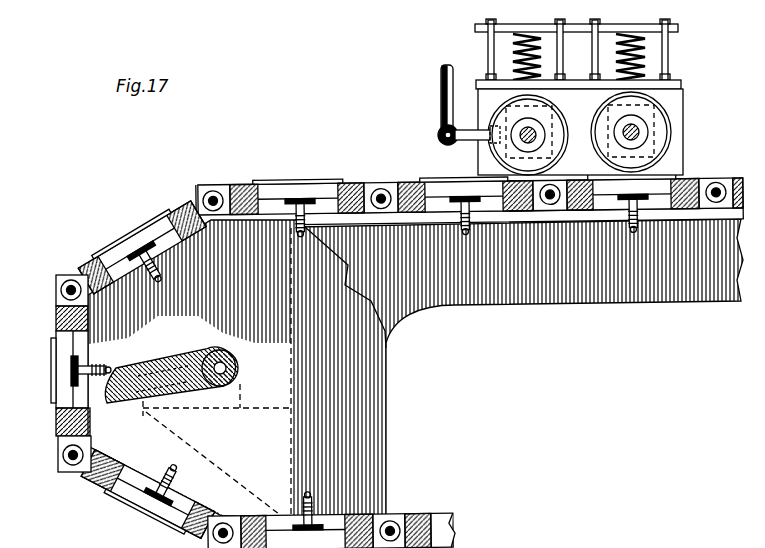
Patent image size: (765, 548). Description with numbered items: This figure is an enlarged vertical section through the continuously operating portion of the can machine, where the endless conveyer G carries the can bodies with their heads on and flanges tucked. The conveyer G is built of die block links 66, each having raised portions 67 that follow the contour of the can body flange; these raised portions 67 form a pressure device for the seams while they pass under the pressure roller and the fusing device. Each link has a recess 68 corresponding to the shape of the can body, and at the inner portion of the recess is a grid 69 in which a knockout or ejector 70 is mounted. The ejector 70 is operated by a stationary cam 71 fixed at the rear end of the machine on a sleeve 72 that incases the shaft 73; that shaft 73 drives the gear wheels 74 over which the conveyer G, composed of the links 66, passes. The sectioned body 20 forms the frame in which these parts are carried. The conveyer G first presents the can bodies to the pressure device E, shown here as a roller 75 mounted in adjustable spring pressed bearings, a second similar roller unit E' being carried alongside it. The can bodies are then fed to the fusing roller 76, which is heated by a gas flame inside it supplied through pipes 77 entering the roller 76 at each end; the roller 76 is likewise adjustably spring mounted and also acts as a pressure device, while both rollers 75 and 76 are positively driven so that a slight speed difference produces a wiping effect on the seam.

The body 20 is at (610, 289).
The die block links 66 is at (237, 177).
The raised portions 67 is at (336, 176).
The recesses 68 is at (63, 335).
The grid 69 is at (168, 243).
The knockout or ejector 70 is at (445, 190).
The stationary cam 71 is at (137, 367).
The sleeve 72 is at (220, 347).
The shaft 73 is at (232, 376).
The gear wheels 74 is at (379, 383).
The roller 75 is at (664, 122).
The roller 76 is at (483, 140).
The pipes 77 is at (457, 105).
The pressure device E is at (591, 97).
The carriage wheel E' is at (513, 119).
The endless conveyer G is at (687, 169).